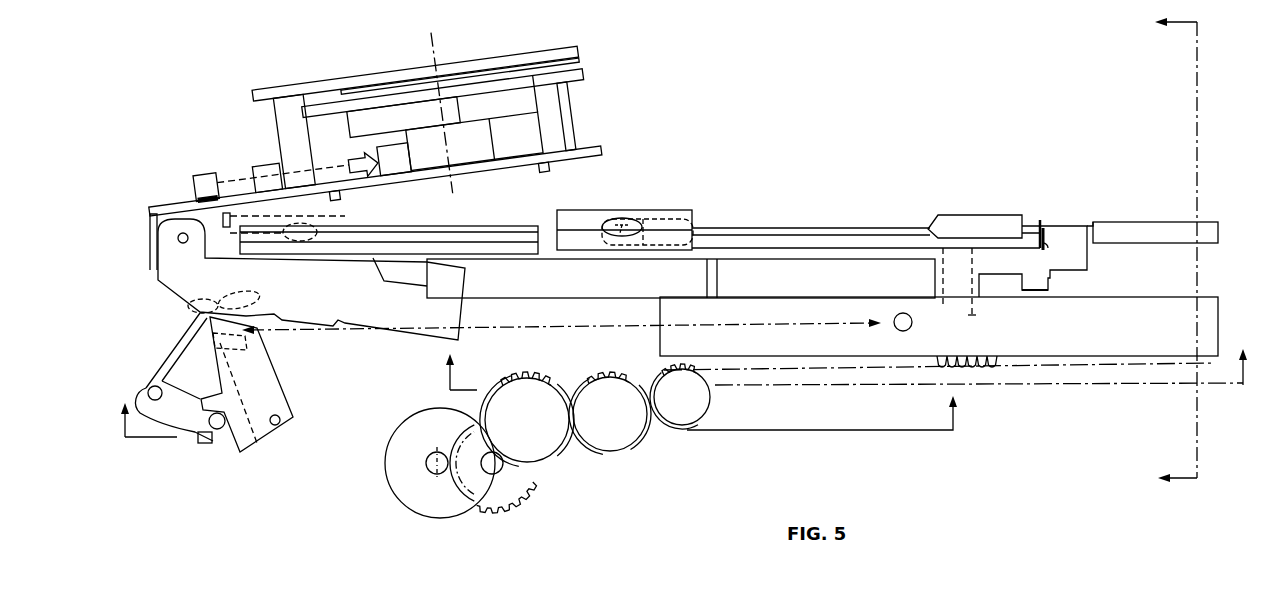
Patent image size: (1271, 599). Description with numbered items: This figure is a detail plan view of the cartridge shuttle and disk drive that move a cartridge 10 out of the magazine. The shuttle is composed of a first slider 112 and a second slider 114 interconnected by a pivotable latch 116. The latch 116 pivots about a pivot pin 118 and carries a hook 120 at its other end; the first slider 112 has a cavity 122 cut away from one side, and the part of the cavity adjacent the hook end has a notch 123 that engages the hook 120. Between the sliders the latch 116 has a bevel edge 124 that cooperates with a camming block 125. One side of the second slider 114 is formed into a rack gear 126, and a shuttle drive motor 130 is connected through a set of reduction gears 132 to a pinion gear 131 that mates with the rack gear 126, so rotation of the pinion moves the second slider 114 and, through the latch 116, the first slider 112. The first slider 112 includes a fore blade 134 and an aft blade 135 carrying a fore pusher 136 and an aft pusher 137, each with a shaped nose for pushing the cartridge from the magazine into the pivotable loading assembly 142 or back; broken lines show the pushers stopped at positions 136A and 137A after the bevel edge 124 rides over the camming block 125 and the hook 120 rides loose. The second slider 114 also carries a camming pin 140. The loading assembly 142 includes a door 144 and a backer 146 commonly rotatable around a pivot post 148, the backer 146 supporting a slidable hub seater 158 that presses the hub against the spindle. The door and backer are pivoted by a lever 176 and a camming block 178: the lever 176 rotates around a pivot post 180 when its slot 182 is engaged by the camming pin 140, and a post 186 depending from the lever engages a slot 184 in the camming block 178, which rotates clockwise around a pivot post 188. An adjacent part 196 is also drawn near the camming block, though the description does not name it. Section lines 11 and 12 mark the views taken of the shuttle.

The cartridge 10 is at (1172, 241).
The section line 11 is at (849, 369).
The section line 12 is at (541, 416).
The first slider 112 is at (1141, 233).
The second slider 114 is at (1040, 346).
The pivotable latch 116 is at (1075, 259).
The pivot pin 118 is at (976, 317).
The hook 120 is at (1039, 225).
The cavity 122 is at (742, 244).
The notch 123 is at (1045, 239).
The bevel edge 124 is at (1050, 278).
The camming block 125 is at (715, 283).
The rack gear 126 is at (942, 370).
The shuttle drive motor 130 is at (458, 517).
The pinion gear 131 is at (709, 398).
The reduction gears 132 is at (578, 448).
The fore blade 134 is at (1088, 224).
The aft blade 135 is at (550, 240).
The fore pusher 136 is at (975, 222).
The fore pusher position 136A is at (698, 216).
The aft pusher 137 is at (577, 222).
The aft pusher position 137A is at (307, 222).
The camming pin 140 is at (910, 330).
The pivotable loading assembly 142 is at (153, 281).
The door 144 is at (441, 247).
The backer 146 is at (327, 304).
The pivot post 148 is at (180, 212).
The hub seater 158 is at (458, 278).
The lever 176 is at (172, 343).
The camming block 178 is at (293, 402).
The pivot post 180 is at (149, 389).
The slot 182 is at (219, 313).
The slot 184 is at (217, 437).
The post 186 is at (208, 425).
The pivot post 188 is at (281, 421).
The block 196 is at (256, 388).